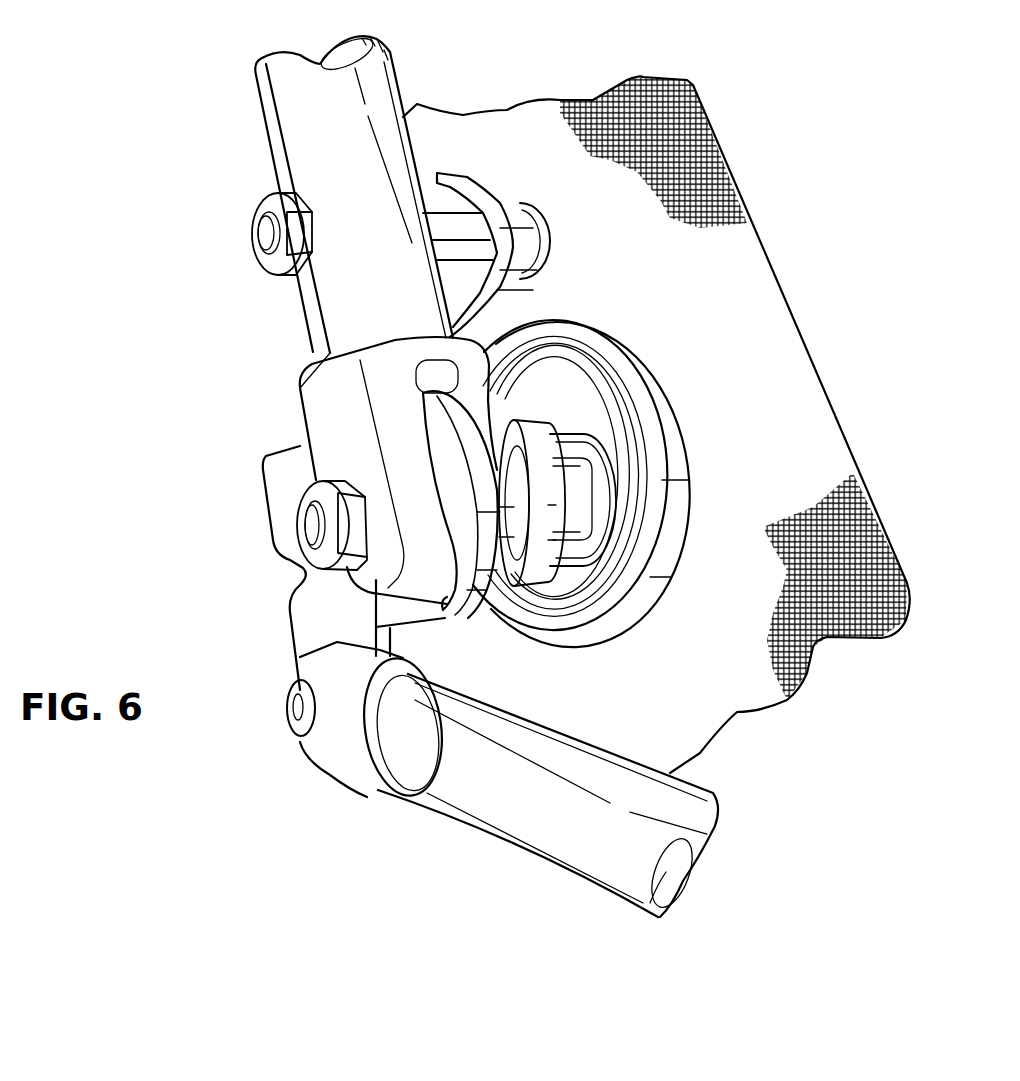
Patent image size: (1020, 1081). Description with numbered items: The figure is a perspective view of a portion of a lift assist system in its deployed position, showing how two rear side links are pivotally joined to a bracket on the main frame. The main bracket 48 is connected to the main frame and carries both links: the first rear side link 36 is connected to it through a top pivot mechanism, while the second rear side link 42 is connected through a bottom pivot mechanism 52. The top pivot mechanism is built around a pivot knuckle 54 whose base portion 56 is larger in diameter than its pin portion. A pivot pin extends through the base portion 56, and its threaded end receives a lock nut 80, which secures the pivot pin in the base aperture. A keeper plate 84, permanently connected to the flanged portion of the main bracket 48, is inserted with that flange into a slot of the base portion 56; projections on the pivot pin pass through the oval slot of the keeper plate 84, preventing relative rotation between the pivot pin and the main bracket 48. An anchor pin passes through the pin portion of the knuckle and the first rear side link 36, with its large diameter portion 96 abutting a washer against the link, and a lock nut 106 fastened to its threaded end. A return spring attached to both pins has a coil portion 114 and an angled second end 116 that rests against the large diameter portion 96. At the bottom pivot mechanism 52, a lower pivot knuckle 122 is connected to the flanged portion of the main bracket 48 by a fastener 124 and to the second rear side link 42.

The first rear side link 36 is at (267, 135).
The second rear side link 42 is at (567, 838).
The main bracket 48 is at (300, 632).
The bottom pivot mechanism 52 is at (343, 803).
The pivot knuckle 54 is at (296, 422).
The base portion 56 is at (310, 403).
The lock nut 80 is at (305, 541).
The keeper plate 84 is at (440, 620).
The large diameter portion 96 is at (450, 224).
The lock nut 106 is at (248, 243).
The coil portion 114 is at (648, 412).
The second end 116 is at (444, 178).
The lower pivot knuckle 122 is at (322, 757).
The fastener 124 is at (293, 713).